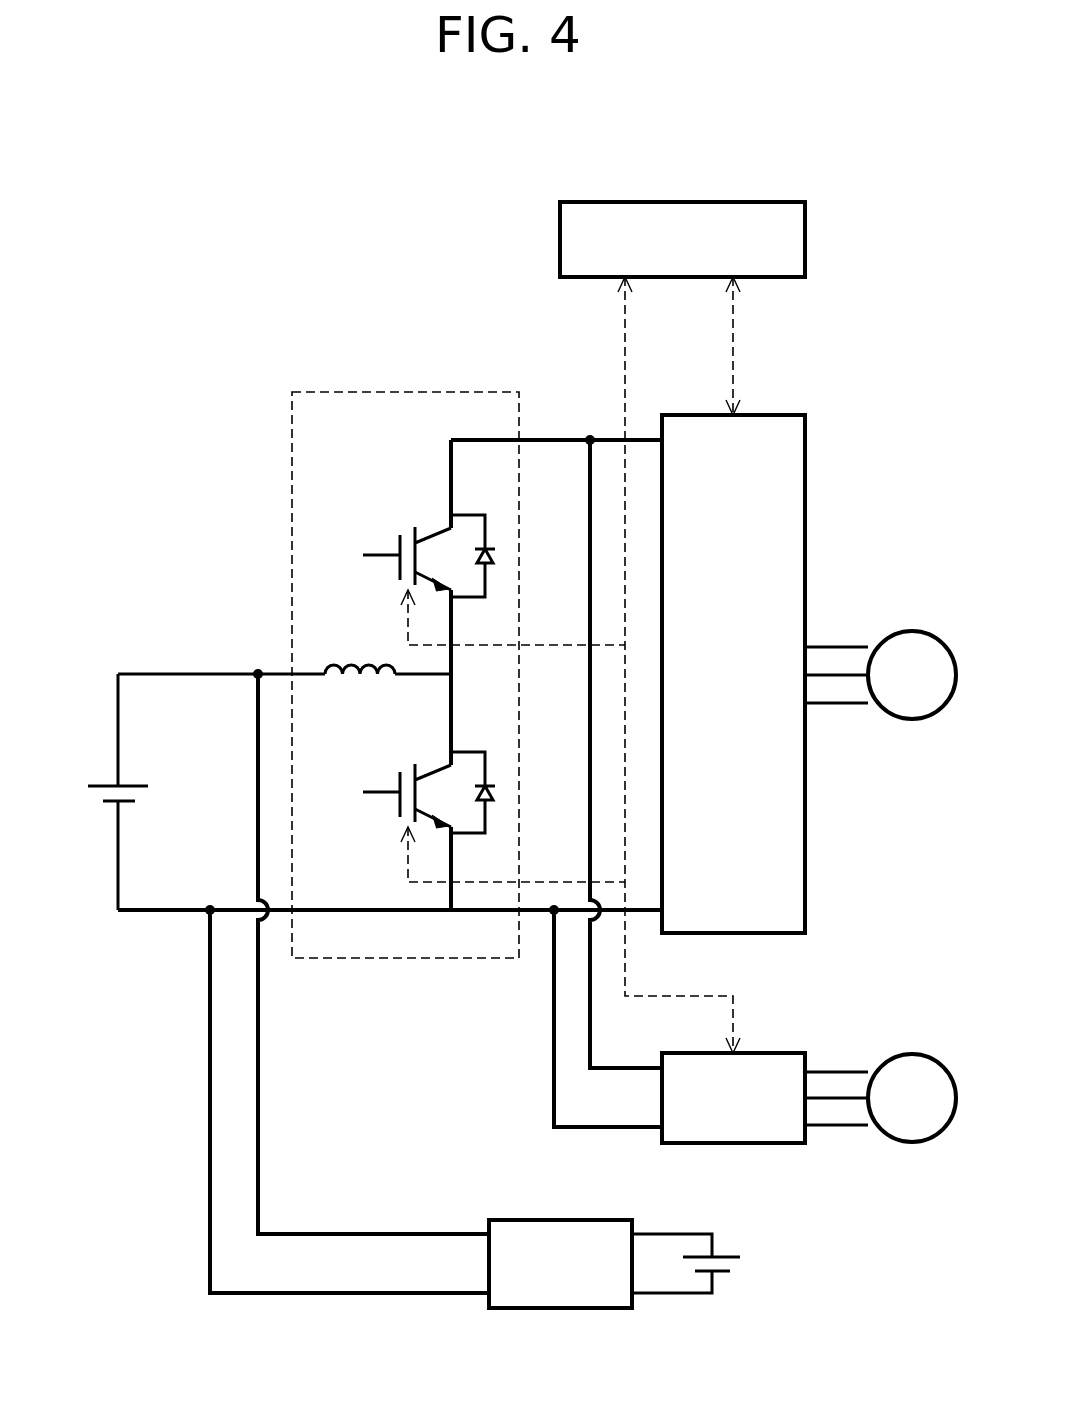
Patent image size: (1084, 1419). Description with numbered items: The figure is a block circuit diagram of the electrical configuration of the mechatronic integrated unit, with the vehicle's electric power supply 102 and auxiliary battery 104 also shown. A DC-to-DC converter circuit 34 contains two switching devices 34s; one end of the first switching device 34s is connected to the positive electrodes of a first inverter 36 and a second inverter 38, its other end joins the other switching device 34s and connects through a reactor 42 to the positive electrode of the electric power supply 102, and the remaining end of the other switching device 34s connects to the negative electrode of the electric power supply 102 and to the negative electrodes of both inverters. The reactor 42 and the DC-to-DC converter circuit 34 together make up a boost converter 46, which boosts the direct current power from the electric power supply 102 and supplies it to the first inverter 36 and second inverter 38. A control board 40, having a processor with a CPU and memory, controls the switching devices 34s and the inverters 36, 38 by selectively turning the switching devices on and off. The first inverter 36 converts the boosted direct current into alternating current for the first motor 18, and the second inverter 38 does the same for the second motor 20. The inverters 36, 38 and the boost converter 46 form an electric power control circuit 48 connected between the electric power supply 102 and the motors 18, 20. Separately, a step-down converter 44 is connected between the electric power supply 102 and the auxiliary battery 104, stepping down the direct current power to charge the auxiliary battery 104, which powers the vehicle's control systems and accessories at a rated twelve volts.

The first motor 18 is at (910, 631).
The second motor 20 is at (910, 1054).
The DC-to-DC converter circuit 34 is at (375, 624).
The switching device 34s is at (398, 548).
The first inverter 36 is at (770, 415).
The second inverter 38 is at (770, 1053).
The control board 40 is at (770, 202).
The reactor 42 is at (358, 668).
The step-down converter 44 is at (560, 1310).
The boost converter 46 is at (430, 392).
The electric power control circuit 48 is at (862, 298).
The electric power supply 102 is at (104, 786).
The auxiliary battery 104 is at (740, 1252).